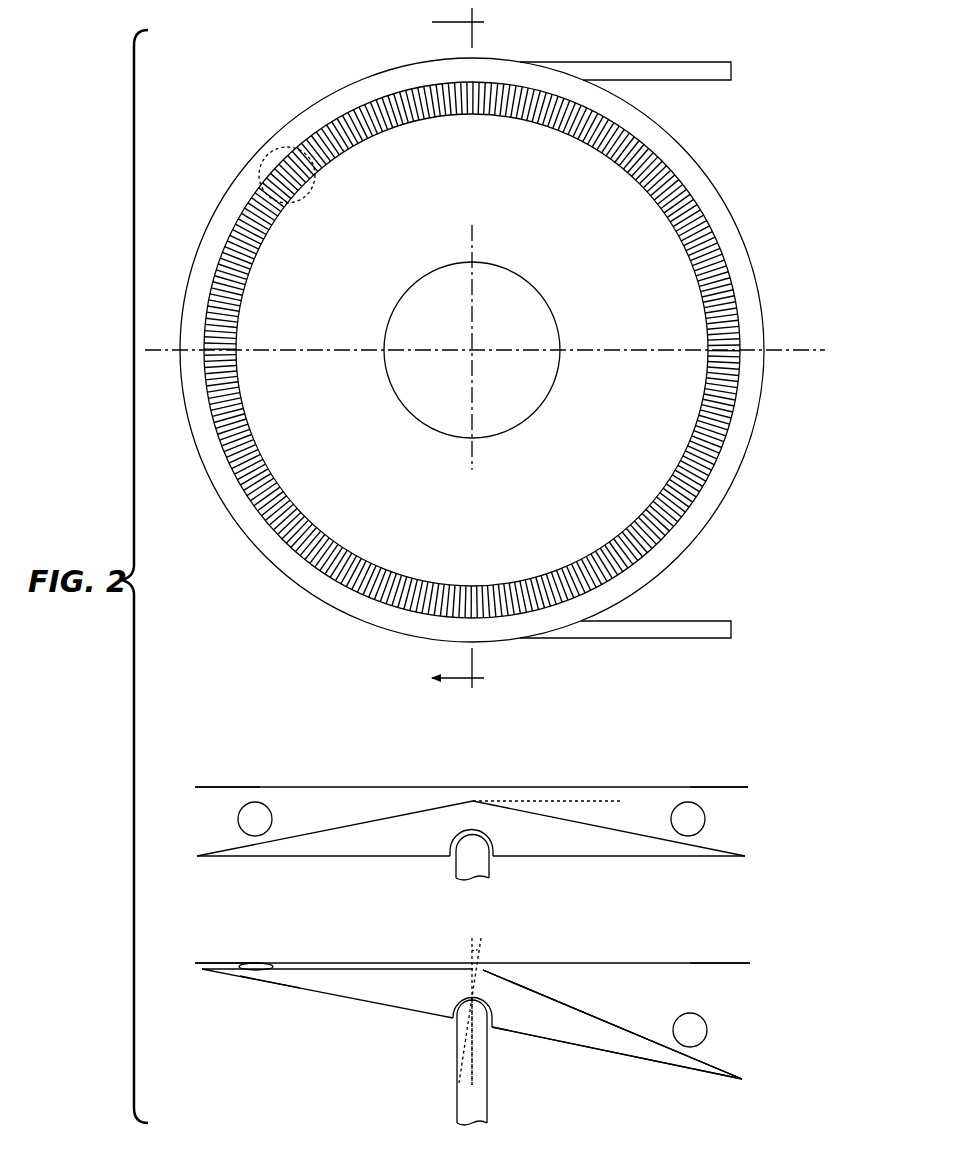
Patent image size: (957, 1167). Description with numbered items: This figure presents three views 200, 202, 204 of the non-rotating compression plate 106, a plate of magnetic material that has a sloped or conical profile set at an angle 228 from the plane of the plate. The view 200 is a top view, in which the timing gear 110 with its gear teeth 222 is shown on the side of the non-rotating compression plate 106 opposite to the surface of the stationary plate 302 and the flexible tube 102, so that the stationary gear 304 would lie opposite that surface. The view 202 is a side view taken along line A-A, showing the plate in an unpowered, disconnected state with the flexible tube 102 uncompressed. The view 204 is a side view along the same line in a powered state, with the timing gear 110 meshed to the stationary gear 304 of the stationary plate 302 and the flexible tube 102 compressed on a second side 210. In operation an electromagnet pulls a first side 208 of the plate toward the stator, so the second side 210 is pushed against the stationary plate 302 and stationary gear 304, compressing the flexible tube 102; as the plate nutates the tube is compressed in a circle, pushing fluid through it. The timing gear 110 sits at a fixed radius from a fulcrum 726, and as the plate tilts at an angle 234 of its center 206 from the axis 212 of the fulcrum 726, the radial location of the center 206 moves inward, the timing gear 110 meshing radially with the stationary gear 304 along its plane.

The view 200 is at (753, 54).
The flexible tube 102 is at (707, 62).
The non-rotating compression plate 106 is at (691, 148).
The timing gear 110 is at (740, 286).
The center 206 is at (466, 346).
The gear teeth 222 is at (281, 145).
The view 202 is at (287, 709).
The view 204 is at (771, 1100).
The stationary plate 302 is at (288, 787).
The stationary gear 304 is at (220, 787).
The angle 228 is at (577, 804).
The angle 234 is at (479, 948).
The first side 208 is at (635, 1033).
The second side 210 is at (255, 987).
The axis 212 is at (473, 1070).
The fulcrum 726 is at (455, 1098).